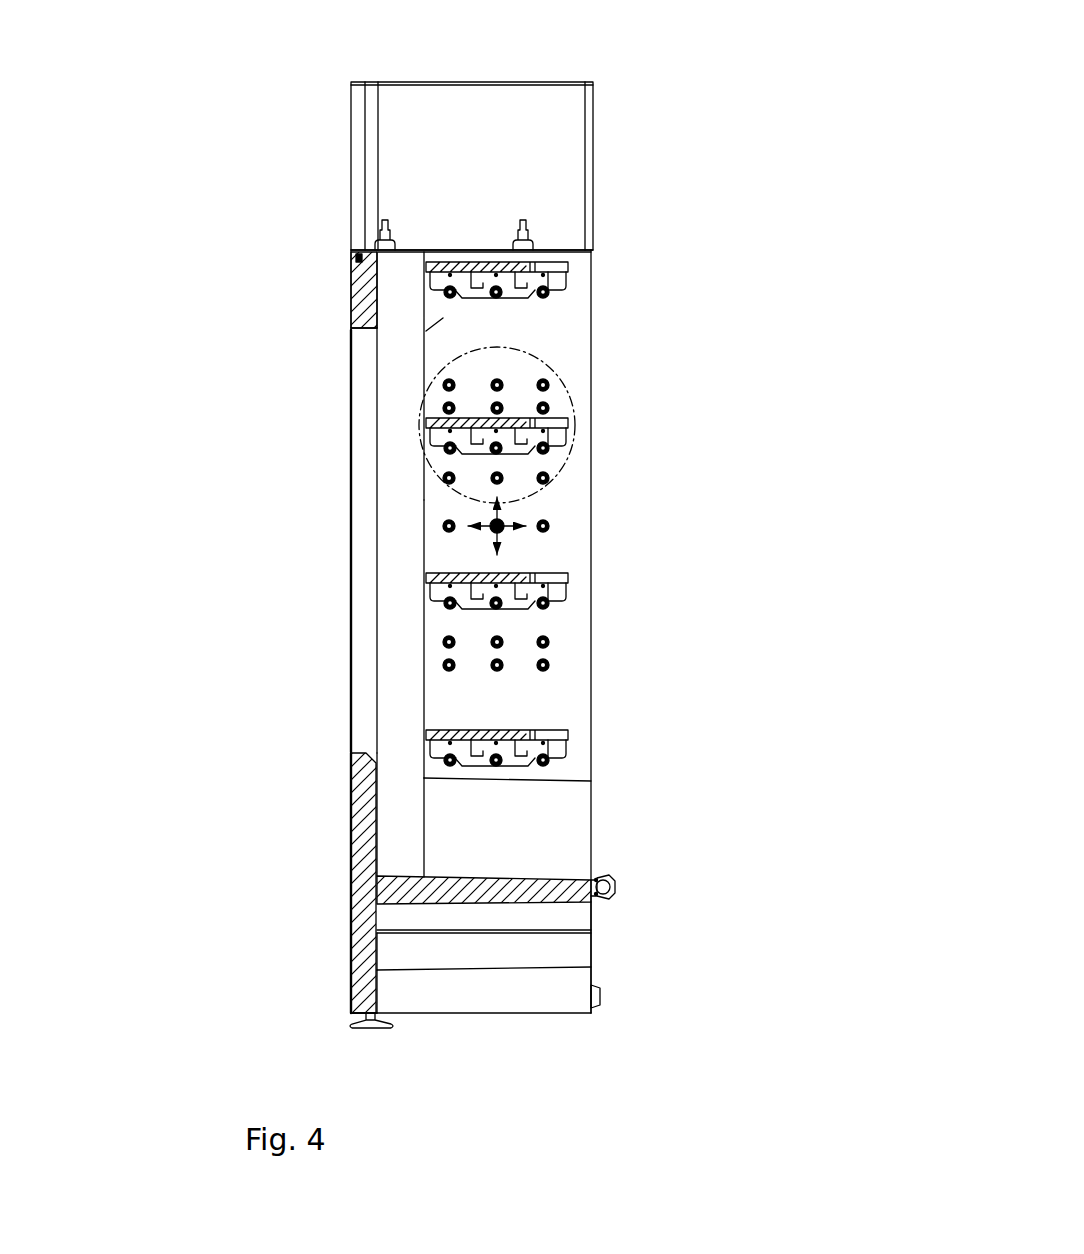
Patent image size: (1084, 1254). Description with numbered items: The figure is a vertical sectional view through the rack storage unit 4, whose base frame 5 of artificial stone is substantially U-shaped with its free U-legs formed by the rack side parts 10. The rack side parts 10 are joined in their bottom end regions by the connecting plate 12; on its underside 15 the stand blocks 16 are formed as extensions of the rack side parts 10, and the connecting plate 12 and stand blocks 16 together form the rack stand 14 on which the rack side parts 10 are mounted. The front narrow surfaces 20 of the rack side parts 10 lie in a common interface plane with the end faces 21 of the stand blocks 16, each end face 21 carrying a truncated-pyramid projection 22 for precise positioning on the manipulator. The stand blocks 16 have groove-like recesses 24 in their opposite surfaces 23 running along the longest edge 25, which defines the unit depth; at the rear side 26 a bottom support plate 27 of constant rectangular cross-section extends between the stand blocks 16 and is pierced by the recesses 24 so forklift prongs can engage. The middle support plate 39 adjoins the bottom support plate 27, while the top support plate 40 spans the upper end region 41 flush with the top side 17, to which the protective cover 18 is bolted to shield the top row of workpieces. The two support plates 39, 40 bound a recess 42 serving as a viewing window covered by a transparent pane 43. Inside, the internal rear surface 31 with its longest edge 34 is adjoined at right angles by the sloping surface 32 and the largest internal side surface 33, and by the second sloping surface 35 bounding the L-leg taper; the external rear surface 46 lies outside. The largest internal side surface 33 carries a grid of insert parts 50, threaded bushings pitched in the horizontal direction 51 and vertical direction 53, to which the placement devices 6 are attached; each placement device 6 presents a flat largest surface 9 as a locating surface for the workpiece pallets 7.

The rack storage unit 4 is at (690, 130).
The base frame 5 is at (302, 885).
The placement device 6 is at (567, 285).
The workpiece pallet 7 is at (555, 423).
The largest surface 9 is at (516, 578).
The rack side part 10 is at (573, 517).
The connecting plate 12 is at (535, 890).
The rack stand 14 is at (307, 1008).
The underside 15 is at (480, 903).
The stand block 16 is at (523, 993).
The top side 17 is at (563, 250).
The protective cover 18 is at (572, 140).
The front narrow surface 20 is at (598, 340).
The end face 21 is at (590, 973).
The projection 22 is at (602, 998).
The opposite surface 23 is at (490, 993).
The groove-like recess 24 is at (468, 970).
The longest edge 25 is at (425, 1017).
The rear side 26 is at (345, 953).
The bottom support plate 27 is at (347, 997).
The internal rear surface 31 is at (426, 331).
The sloping surface 32 is at (537, 812).
The largest internal side surface 33 is at (570, 666).
The longest edge 34 is at (424, 517).
The second sloping surface 35 is at (403, 633).
The middle support plate 39 is at (357, 820).
The top support plate 40 is at (360, 293).
The upper end region 41 is at (582, 268).
The recess 42 is at (372, 446).
The transparent pane 43 is at (350, 695).
The external rear surface 46 is at (352, 305).
The insert part 50 is at (549, 640).
The horizontal direction 51 is at (505, 517).
The vertical direction 53 is at (480, 548).